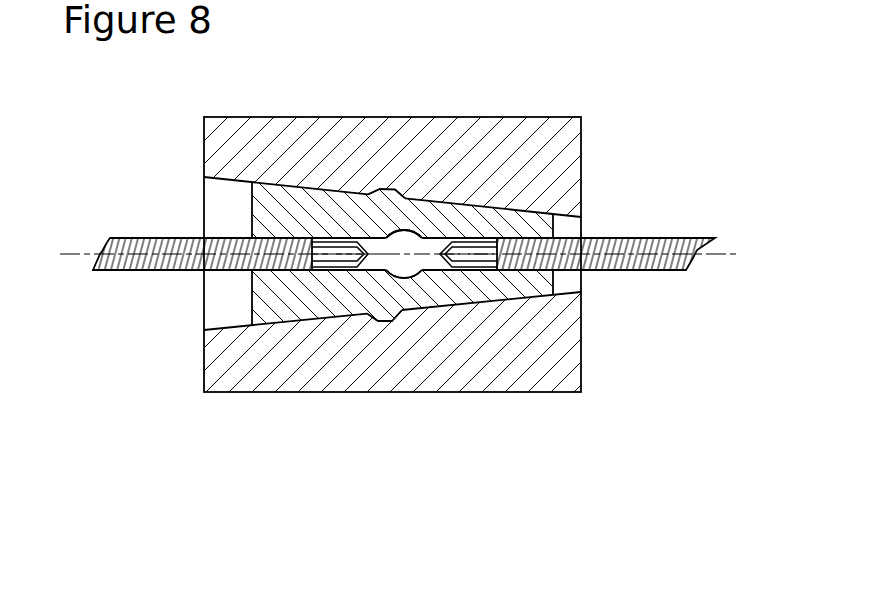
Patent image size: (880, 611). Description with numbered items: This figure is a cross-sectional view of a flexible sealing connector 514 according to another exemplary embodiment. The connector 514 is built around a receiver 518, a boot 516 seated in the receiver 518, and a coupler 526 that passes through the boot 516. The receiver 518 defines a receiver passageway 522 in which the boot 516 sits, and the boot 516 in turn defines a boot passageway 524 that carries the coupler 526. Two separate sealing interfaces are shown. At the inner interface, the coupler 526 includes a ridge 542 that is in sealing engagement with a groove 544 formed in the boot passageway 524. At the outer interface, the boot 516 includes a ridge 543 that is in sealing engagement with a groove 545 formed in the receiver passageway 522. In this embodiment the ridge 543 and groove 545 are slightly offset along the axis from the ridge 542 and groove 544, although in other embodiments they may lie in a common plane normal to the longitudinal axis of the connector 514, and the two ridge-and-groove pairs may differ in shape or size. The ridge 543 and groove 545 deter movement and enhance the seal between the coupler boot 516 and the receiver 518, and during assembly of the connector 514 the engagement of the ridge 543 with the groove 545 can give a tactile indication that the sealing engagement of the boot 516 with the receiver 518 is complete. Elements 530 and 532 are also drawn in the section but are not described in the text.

The connector 514 is at (182, 135).
The receiver 518 is at (287, 117).
The boot 516 is at (325, 237).
The receiver passageway 522 is at (227, 178).
The boot passageway 524 is at (332, 272).
The coupler 526 is at (403, 265).
The first fiber ferrule 530 is at (132, 262).
The second fiber ferrule 532 is at (667, 247).
The ridge 542 is at (412, 235).
The groove 544 is at (402, 276).
The ridge 543 is at (388, 188).
The groove 545 is at (382, 322).